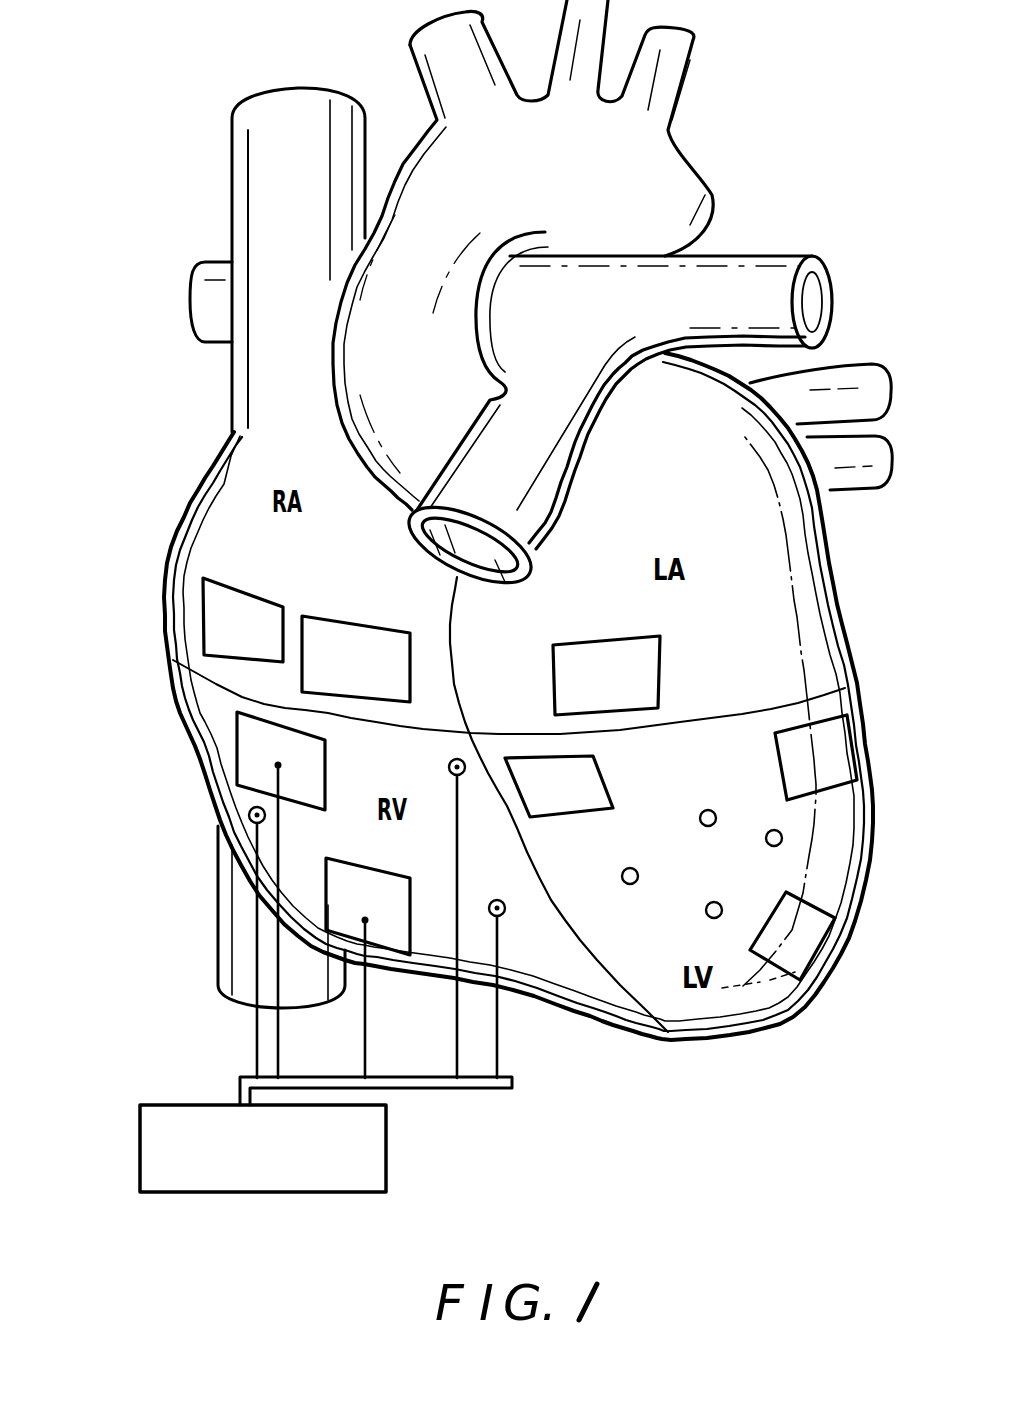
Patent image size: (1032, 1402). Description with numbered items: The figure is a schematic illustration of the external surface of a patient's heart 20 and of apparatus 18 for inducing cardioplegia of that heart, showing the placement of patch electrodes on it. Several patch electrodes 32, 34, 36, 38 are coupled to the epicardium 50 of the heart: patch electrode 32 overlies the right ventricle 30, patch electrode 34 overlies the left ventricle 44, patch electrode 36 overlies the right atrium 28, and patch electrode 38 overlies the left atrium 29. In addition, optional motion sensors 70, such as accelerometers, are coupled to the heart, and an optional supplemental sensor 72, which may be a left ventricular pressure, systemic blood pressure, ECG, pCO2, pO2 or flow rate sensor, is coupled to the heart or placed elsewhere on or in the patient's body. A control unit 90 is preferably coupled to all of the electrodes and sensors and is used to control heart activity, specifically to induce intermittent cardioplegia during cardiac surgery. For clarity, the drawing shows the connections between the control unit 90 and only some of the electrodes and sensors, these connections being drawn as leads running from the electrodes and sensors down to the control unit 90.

The apparatus 18 is at (207, 1266).
The heart 20 is at (148, 392).
The right atrium 28 is at (186, 512).
The left atrium 29 is at (832, 550).
The right ventricle 30 is at (210, 795).
The patch electrode 32 is at (326, 872).
The patch electrode 34 is at (602, 781).
The patch electrode 36 is at (259, 606).
The patch electrode 38 is at (656, 682).
The left ventricle 44 is at (877, 893).
The epicardium 50 is at (188, 716).
The motion sensors 70 is at (708, 810).
The supplemental sensor 72 is at (448, 262).
The control unit 90 is at (178, 1104).